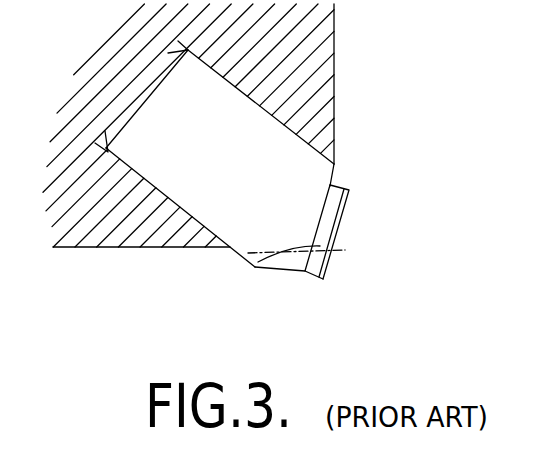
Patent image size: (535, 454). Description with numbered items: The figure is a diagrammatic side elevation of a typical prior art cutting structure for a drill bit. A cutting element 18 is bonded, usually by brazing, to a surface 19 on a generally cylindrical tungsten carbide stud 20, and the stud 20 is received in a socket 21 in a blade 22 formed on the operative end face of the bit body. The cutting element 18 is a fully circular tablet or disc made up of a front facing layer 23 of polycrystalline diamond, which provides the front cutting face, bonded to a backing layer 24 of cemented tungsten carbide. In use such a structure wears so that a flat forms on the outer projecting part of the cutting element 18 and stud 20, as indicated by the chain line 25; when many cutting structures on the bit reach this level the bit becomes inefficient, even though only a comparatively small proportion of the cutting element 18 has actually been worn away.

The cutting element 18 is at (352, 189).
The surface 19 is at (337, 175).
The tungsten carbide stud 20 is at (238, 140).
The socket 21 is at (168, 200).
The blade 22 is at (105, 237).
The front facing layer 23 is at (341, 223).
The backing layer 24 is at (320, 246).
The chain line 25 is at (281, 256).